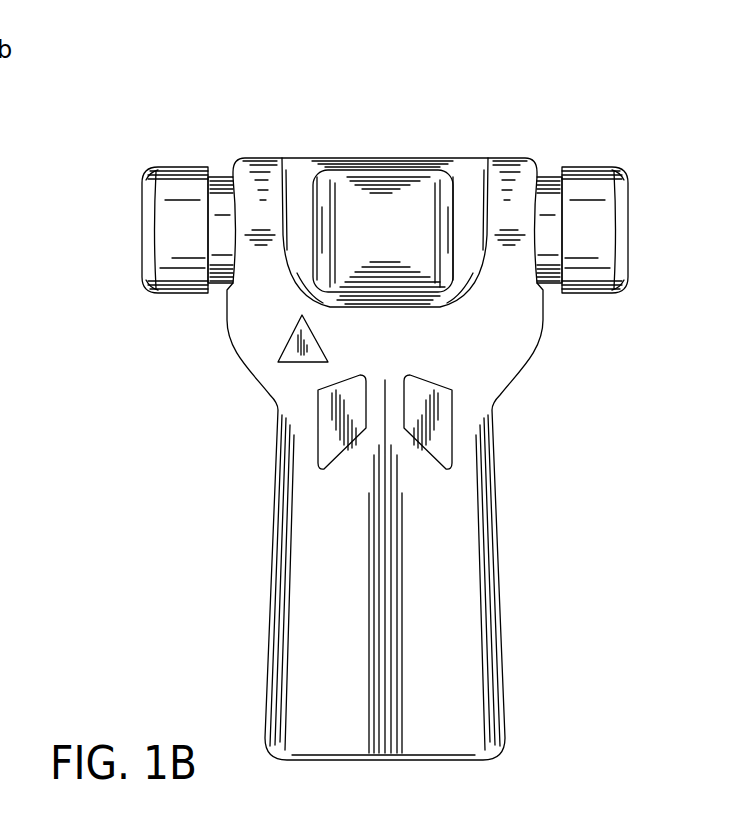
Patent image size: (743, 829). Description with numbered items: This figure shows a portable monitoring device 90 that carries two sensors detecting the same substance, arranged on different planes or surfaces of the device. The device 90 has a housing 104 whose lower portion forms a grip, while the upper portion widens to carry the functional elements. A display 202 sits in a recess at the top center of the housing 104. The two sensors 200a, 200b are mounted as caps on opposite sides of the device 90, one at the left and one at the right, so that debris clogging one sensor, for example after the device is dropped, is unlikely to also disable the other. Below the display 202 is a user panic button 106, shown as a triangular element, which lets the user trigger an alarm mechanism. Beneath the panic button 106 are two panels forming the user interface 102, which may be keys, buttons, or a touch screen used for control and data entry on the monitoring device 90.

The monitoring device 90 is at (315, 130).
The housing 104 is at (268, 630).
The display 202 is at (417, 193).
The sensor 200a is at (138, 251).
The sensor 200b is at (625, 247).
The user panic button 106 is at (288, 352).
The user interface 102 is at (330, 433).